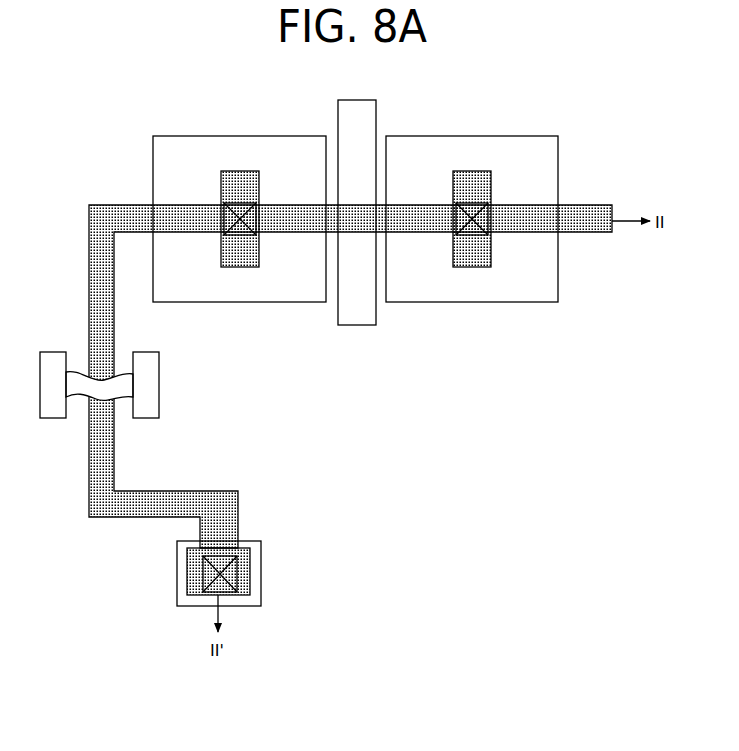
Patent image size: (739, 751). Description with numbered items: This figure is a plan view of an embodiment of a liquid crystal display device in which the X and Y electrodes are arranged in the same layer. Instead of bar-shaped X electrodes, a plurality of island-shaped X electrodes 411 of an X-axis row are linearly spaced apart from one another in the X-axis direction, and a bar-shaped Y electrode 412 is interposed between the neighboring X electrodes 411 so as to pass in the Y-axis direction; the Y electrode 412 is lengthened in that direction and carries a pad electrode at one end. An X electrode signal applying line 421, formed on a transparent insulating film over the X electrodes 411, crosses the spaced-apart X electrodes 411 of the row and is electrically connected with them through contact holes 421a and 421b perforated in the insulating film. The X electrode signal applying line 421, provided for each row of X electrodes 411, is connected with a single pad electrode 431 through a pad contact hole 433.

The X electrode 411 is at (548, 147).
The Y electrode 412 is at (371, 116).
The X electrode signal applying line 421 is at (613, 207).
The contact hole 421a is at (242, 244).
The contact hole 421b is at (472, 244).
The pad electrode 431 is at (257, 573).
The pad contact hole 433 is at (197, 581).